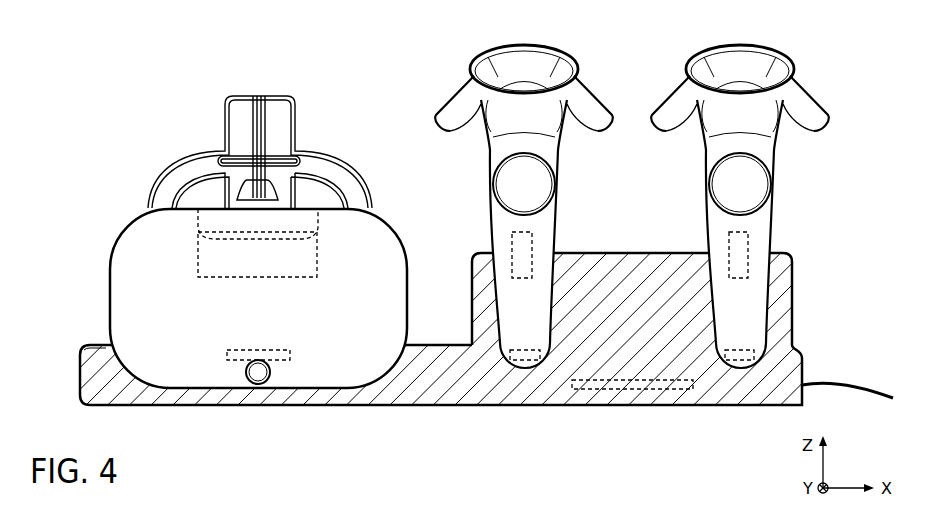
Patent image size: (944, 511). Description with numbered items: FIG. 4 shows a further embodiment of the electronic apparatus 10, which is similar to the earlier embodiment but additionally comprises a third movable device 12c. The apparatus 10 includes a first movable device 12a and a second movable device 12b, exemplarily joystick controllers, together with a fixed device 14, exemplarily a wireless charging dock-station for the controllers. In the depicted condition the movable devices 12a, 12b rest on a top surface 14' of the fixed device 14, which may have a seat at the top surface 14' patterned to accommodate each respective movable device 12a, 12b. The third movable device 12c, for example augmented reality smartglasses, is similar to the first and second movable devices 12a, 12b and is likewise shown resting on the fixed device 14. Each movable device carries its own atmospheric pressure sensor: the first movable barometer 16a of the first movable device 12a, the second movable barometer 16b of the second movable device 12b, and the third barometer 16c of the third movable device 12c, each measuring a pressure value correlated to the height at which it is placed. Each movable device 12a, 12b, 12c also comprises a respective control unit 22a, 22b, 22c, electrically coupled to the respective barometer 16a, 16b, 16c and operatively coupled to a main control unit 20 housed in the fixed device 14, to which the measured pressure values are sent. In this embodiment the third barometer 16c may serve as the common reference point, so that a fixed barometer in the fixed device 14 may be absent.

The electronic apparatus 10 is at (100, 150).
The first movable device 12a is at (492, 200).
The second movable device 12b is at (769, 152).
The third movable device 12c is at (142, 255).
The fixed device 14 is at (466, 315).
The top surface 14' is at (632, 265).
The first movable barometer 16a is at (525, 352).
The second movable barometer 16b is at (747, 353).
The third barometer 16c is at (263, 357).
The main control unit 20 is at (627, 405).
The control unit 22a is at (510, 282).
The control unit 22b is at (746, 266).
The control unit 22c is at (223, 268).